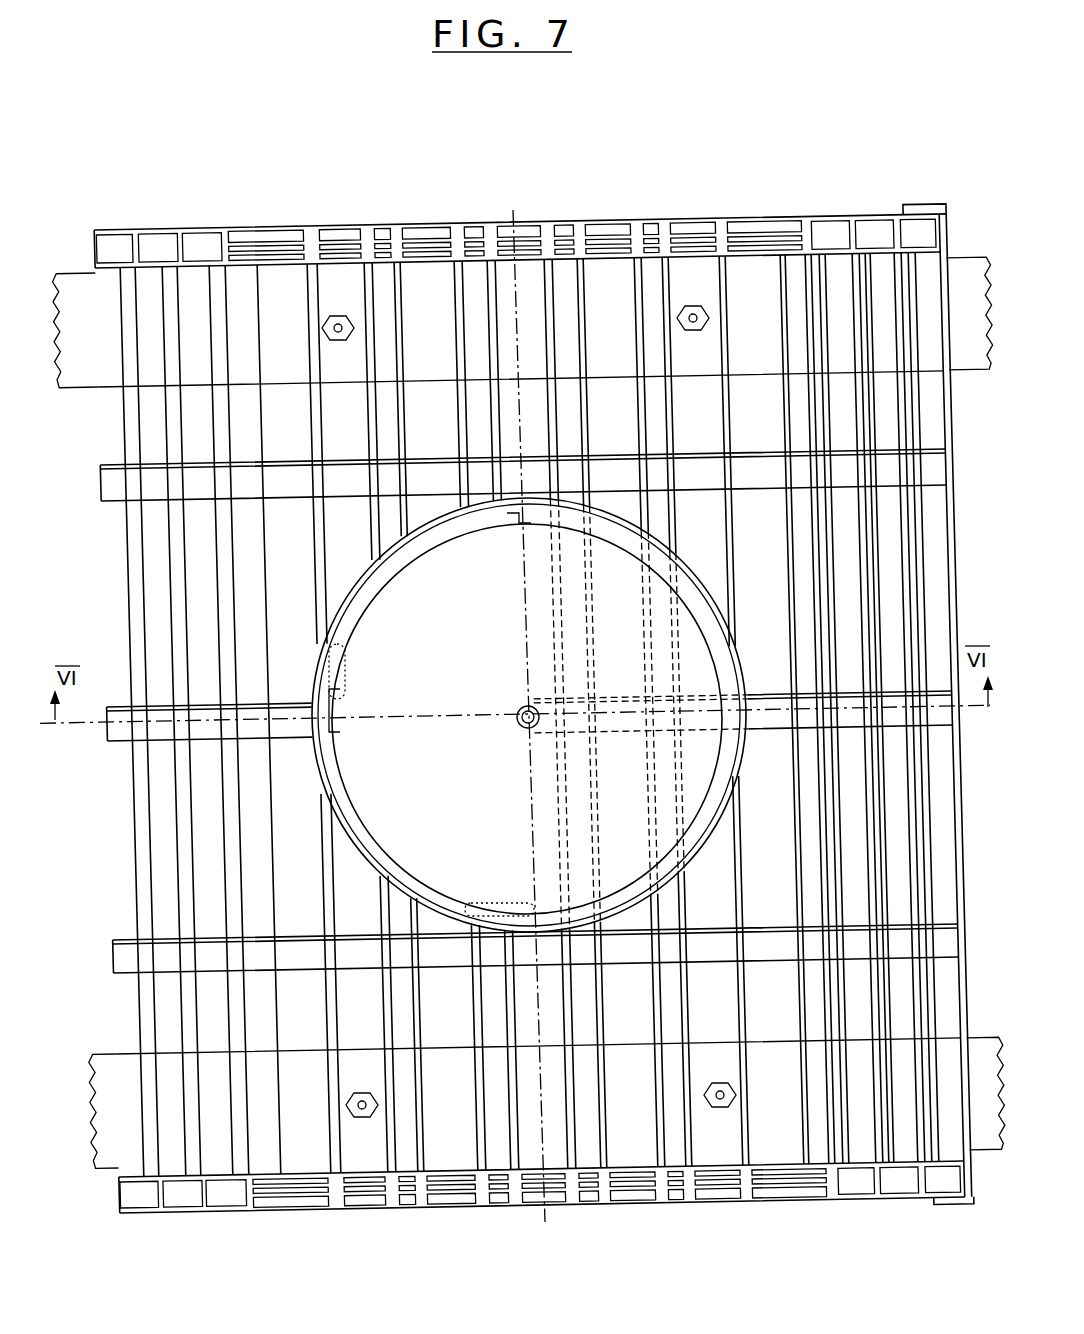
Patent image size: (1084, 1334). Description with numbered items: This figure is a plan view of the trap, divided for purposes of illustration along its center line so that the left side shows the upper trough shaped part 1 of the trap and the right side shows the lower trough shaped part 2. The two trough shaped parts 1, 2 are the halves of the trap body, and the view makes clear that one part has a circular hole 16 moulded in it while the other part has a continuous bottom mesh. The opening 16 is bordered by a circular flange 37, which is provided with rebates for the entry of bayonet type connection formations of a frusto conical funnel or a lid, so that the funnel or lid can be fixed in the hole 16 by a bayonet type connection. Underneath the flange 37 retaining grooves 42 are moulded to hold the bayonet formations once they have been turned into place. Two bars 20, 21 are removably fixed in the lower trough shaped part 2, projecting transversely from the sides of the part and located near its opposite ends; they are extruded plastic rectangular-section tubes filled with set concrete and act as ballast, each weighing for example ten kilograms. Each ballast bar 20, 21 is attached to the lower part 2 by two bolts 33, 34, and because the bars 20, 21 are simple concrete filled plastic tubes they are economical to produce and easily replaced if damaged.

The upper trough shaped part 1 is at (124, 837).
The lower trough shaped part 2 is at (969, 828).
The hole 16 is at (485, 820).
The bar 20 is at (108, 1057).
The bar 21 is at (82, 385).
The bolt 33 is at (338, 340).
The bolt 34 is at (693, 330).
The circular flange 37 is at (352, 812).
The retaining grooves 42 is at (346, 660).